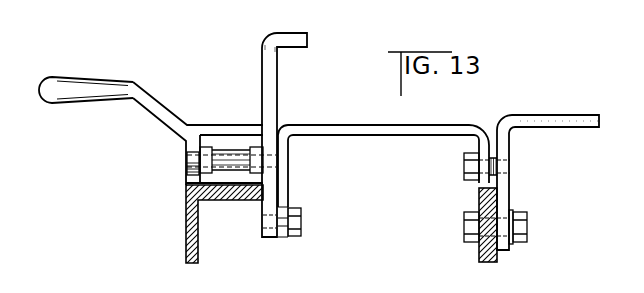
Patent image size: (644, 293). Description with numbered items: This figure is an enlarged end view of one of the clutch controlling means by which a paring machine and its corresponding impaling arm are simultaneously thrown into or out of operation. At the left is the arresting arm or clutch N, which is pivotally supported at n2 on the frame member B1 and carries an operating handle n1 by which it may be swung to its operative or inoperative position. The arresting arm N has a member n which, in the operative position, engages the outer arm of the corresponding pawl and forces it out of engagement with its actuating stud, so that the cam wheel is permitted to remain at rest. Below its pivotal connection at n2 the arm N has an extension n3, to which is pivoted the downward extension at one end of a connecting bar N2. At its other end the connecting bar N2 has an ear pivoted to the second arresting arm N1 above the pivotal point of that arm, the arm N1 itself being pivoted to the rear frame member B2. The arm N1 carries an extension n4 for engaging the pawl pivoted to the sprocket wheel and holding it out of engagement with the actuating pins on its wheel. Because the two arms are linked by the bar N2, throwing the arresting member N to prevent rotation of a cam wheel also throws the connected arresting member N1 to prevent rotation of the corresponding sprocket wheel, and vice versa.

The arresting arm N is at (228, 131).
The operating handle n1 is at (95, 91).
The pivot of arresting arm n2 is at (213, 170).
The extension of arresting arm n3 is at (260, 208).
The engaging member of arresting arm n is at (290, 40).
The frame member B1 is at (185, 246).
The connecting bar N2 is at (367, 128).
The arresting arm N1 is at (504, 193).
The extension of arresting arm n4 is at (572, 122).
The rear frame member B2 is at (482, 249).